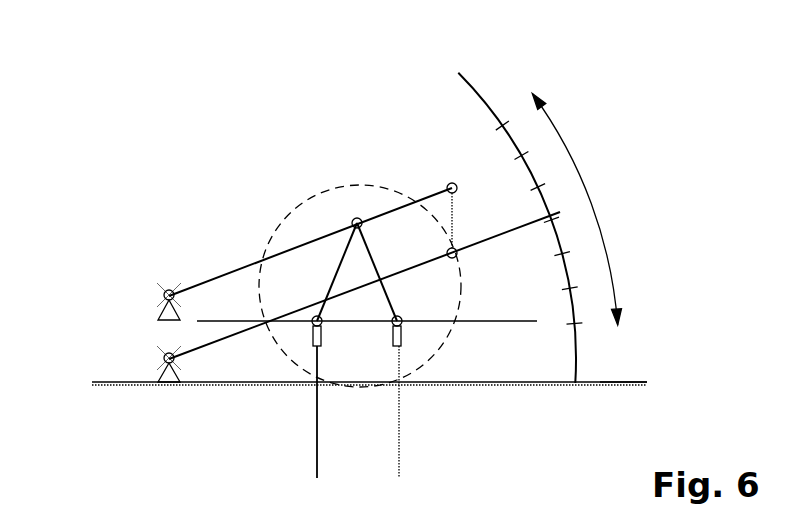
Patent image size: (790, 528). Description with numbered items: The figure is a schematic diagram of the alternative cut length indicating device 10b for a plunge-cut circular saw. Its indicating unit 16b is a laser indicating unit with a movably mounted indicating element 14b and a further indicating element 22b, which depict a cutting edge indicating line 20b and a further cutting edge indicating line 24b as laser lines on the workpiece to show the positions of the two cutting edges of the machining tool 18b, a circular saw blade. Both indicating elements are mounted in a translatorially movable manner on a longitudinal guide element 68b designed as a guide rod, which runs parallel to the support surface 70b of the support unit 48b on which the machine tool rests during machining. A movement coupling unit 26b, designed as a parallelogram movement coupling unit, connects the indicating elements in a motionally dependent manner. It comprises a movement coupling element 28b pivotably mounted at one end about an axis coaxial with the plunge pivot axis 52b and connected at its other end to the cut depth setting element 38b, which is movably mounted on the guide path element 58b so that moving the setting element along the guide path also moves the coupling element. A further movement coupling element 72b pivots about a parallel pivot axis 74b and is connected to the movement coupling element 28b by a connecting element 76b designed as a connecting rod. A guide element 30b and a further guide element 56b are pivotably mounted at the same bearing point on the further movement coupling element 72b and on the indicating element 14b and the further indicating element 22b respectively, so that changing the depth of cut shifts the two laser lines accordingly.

The cut length indicating device 10b is at (170, 162).
The indicating element 14b is at (403, 338).
The indicating unit 16b is at (492, 410).
The machining tool 18b is at (347, 185).
The cutting edge indicating line 20b is at (400, 452).
The further indicating element 22b is at (311, 340).
The further cutting edge indicating line 24b is at (316, 450).
The movement coupling unit 26b is at (108, 292).
The movement coupling element 28b is at (517, 231).
The guide element 30b is at (382, 277).
The cut depth setting element 38b is at (562, 210).
The support unit 48b is at (635, 382).
The plunge pivot axis 52b is at (155, 365).
The further guide element 56b is at (334, 267).
The guide path element 58b is at (483, 92).
The longitudinal guide element 68b is at (518, 322).
The support surface 70b is at (603, 386).
The further movement coupling element 72b is at (230, 267).
The pivot axis 74b is at (167, 289).
The connecting element 76b is at (455, 223).